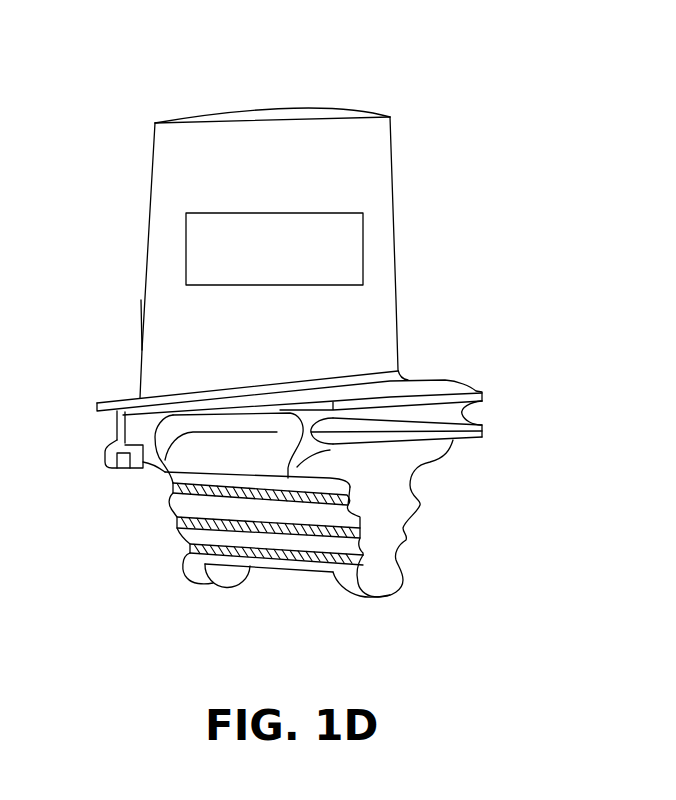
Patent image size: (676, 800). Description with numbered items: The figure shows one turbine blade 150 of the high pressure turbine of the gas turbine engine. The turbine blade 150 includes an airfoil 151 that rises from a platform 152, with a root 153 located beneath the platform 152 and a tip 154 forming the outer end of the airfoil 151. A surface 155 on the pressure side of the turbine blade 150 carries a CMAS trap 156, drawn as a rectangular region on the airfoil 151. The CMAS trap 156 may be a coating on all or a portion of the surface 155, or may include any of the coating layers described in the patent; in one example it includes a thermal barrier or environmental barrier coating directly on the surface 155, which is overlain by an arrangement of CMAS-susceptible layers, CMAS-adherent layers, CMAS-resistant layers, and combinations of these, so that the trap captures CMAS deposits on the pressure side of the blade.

The turbine blade 150 is at (88, 196).
The airfoil 151 is at (394, 279).
The platform 152 is at (510, 403).
The root 153 is at (389, 571).
The tip 154 is at (281, 108).
The surface 155 is at (158, 338).
The CMAS trap 156 is at (294, 258).